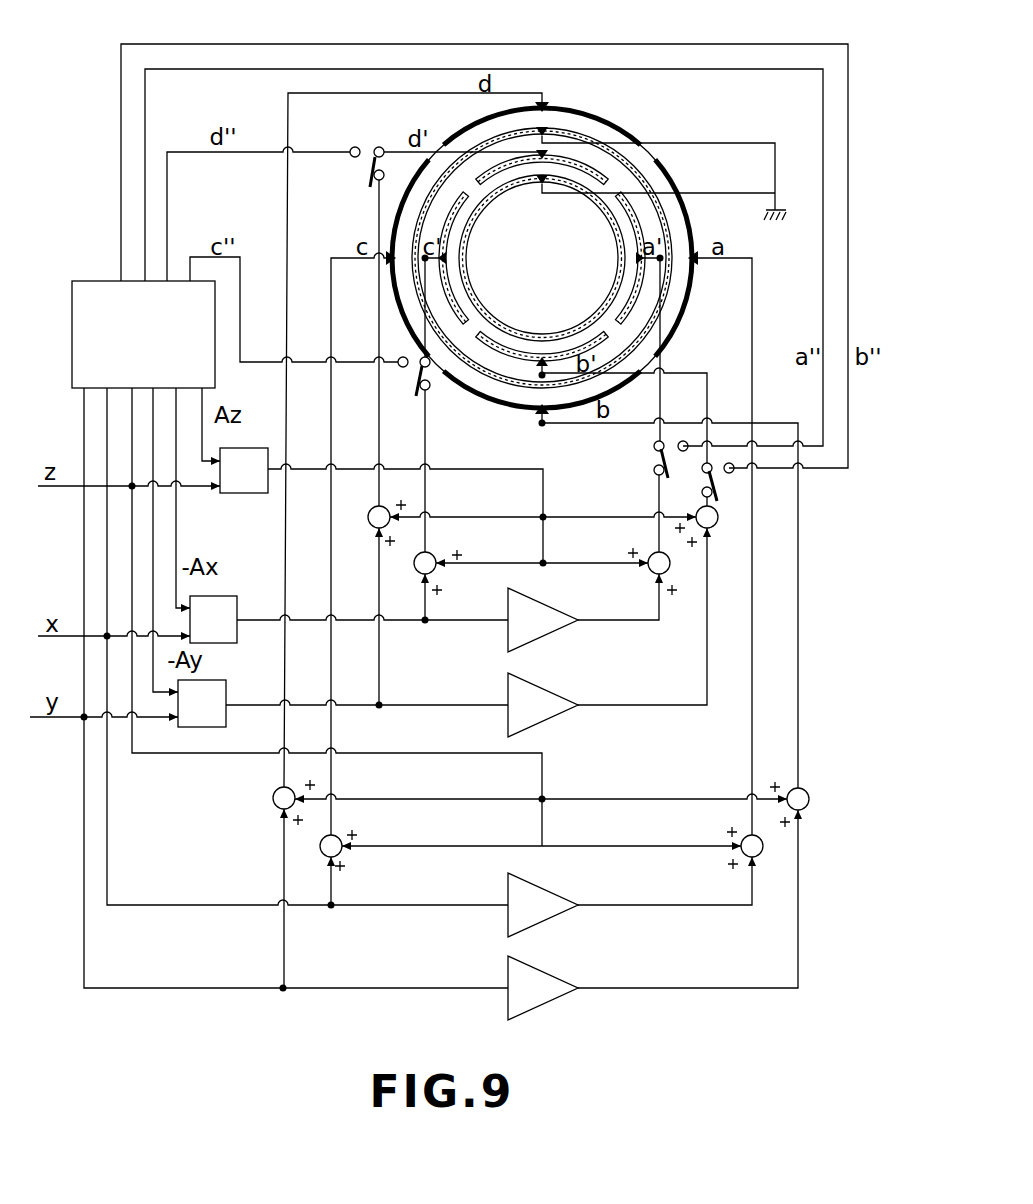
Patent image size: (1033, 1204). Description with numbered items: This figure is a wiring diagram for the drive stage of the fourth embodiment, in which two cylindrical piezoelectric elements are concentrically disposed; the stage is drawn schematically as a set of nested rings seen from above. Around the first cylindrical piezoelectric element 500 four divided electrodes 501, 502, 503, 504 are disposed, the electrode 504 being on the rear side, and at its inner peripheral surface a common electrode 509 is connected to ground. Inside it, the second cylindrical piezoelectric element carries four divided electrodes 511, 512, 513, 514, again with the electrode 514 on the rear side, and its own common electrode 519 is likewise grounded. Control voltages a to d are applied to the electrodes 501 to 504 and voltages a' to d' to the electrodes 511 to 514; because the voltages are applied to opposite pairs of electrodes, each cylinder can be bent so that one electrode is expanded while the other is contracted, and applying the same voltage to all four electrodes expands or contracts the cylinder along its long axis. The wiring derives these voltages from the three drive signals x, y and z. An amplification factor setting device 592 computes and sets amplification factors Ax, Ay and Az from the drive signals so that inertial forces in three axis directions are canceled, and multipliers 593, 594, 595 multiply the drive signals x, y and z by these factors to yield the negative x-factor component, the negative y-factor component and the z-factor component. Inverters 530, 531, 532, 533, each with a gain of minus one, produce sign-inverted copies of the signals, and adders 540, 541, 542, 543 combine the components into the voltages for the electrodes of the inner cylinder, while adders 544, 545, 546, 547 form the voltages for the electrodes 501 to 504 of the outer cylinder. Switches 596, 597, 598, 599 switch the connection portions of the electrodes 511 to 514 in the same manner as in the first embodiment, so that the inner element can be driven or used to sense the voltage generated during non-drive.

The first cylindrical piezoelectric element 500 is at (578, 118).
The electrode 501 is at (662, 183).
The electrode 502 is at (512, 400).
The electrode 503 is at (410, 192).
The electrode 504 is at (600, 118).
The common electrode 509 is at (672, 283).
The electrode 511 is at (630, 217).
The electrode 512 is at (495, 343).
The electrode 513 is at (465, 195).
The electrode 514 is at (512, 160).
The common electrode 519 is at (620, 285).
The inverter 530 is at (551, 615).
The inverter 531 is at (551, 700).
The inverter 532 is at (551, 902).
The inverter 533 is at (551, 983).
The adder 540 is at (443, 562).
The adder 541 is at (647, 561).
The adder 542 is at (370, 515).
The adder 543 is at (716, 530).
The adder 544 is at (351, 840).
The adder 545 is at (734, 835).
The adder 546 is at (274, 794).
The adder 547 is at (812, 794).
The amplification factor setting device 592 is at (143, 334).
The multiplier 593 is at (223, 608).
The multiplier 594 is at (212, 691).
The multiplier 595 is at (250, 458).
The switch 596 is at (648, 459).
The switch 597 is at (729, 483).
The switch 598 is at (403, 376).
The switch 599 is at (351, 167).